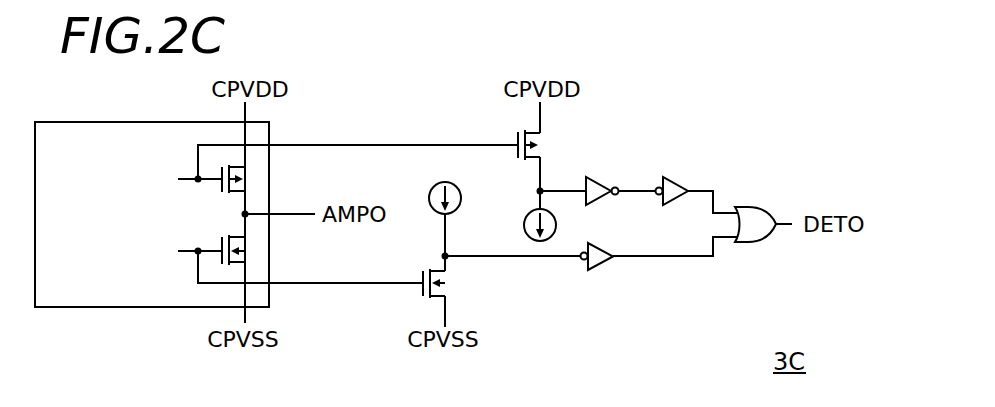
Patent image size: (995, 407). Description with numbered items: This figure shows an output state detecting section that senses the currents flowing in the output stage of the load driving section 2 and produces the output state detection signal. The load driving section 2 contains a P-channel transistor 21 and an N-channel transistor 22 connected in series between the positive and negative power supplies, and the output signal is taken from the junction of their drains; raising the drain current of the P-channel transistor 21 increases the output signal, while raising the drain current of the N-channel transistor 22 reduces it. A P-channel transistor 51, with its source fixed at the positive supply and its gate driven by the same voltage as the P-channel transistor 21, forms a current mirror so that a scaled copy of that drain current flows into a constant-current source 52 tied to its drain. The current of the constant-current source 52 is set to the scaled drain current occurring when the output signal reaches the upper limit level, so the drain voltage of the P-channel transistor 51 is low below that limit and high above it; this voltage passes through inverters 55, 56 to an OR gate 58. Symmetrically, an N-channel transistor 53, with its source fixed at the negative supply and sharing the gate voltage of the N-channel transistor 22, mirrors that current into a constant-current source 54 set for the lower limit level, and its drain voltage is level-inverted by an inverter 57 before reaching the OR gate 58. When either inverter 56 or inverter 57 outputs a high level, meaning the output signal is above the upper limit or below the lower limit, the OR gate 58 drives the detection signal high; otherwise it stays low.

The load driving section 2 is at (137, 122).
The P-channel transistor 21 is at (253, 180).
The N-channel transistor 22 is at (253, 252).
The P-channel transistor 51 is at (517, 133).
The constant-current source 52 is at (526, 219).
The N-channel transistor 53 is at (422, 273).
The constant-current source 54 is at (431, 190).
The inverter 55 is at (602, 184).
The inverter 56 is at (675, 184).
The inverter 57 is at (601, 270).
The OR gate 58 is at (752, 206).